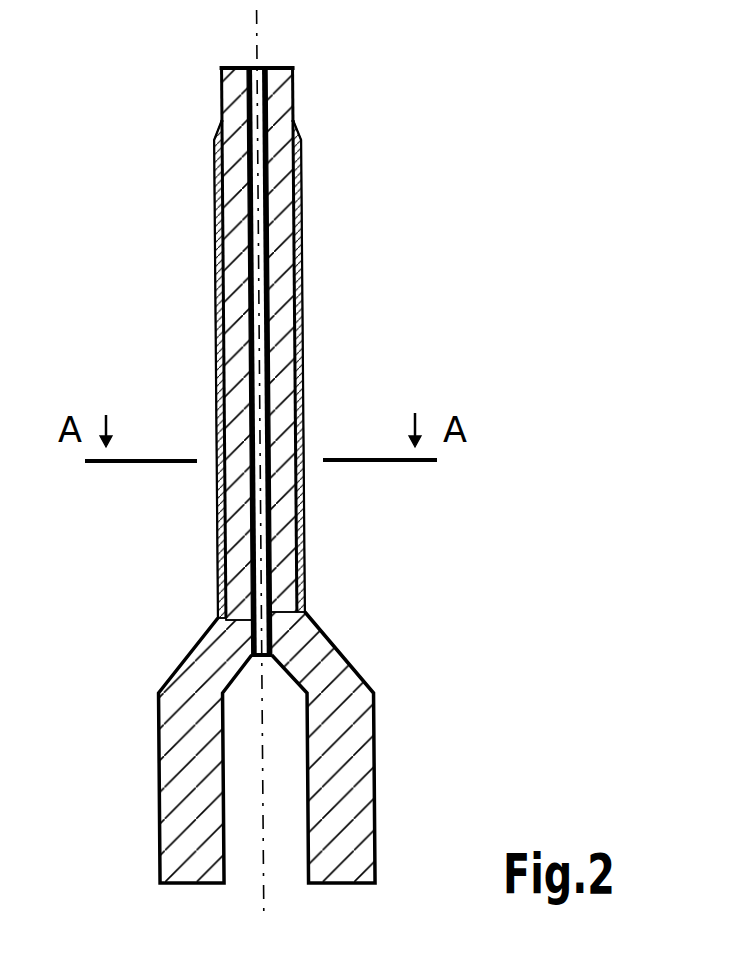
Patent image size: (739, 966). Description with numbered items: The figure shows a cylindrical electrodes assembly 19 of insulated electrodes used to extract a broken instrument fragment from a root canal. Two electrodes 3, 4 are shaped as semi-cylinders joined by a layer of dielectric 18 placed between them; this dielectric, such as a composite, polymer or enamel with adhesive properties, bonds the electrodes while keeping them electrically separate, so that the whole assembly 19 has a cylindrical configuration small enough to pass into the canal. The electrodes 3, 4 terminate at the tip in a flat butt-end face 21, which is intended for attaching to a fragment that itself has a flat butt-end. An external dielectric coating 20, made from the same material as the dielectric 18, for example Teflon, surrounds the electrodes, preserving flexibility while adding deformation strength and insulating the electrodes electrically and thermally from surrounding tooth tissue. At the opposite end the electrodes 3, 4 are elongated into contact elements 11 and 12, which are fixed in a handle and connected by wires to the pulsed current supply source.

The electrode 3 is at (237, 253).
The electrode 4 is at (283, 252).
The contact element 11 is at (185, 782).
The contact element 12 is at (337, 785).
The dielectric layer 18 is at (258, 363).
The electrodes assembly 19 is at (336, 462).
The external dielectric coating 20 is at (215, 157).
The flat butt-end face 21 is at (208, 40).